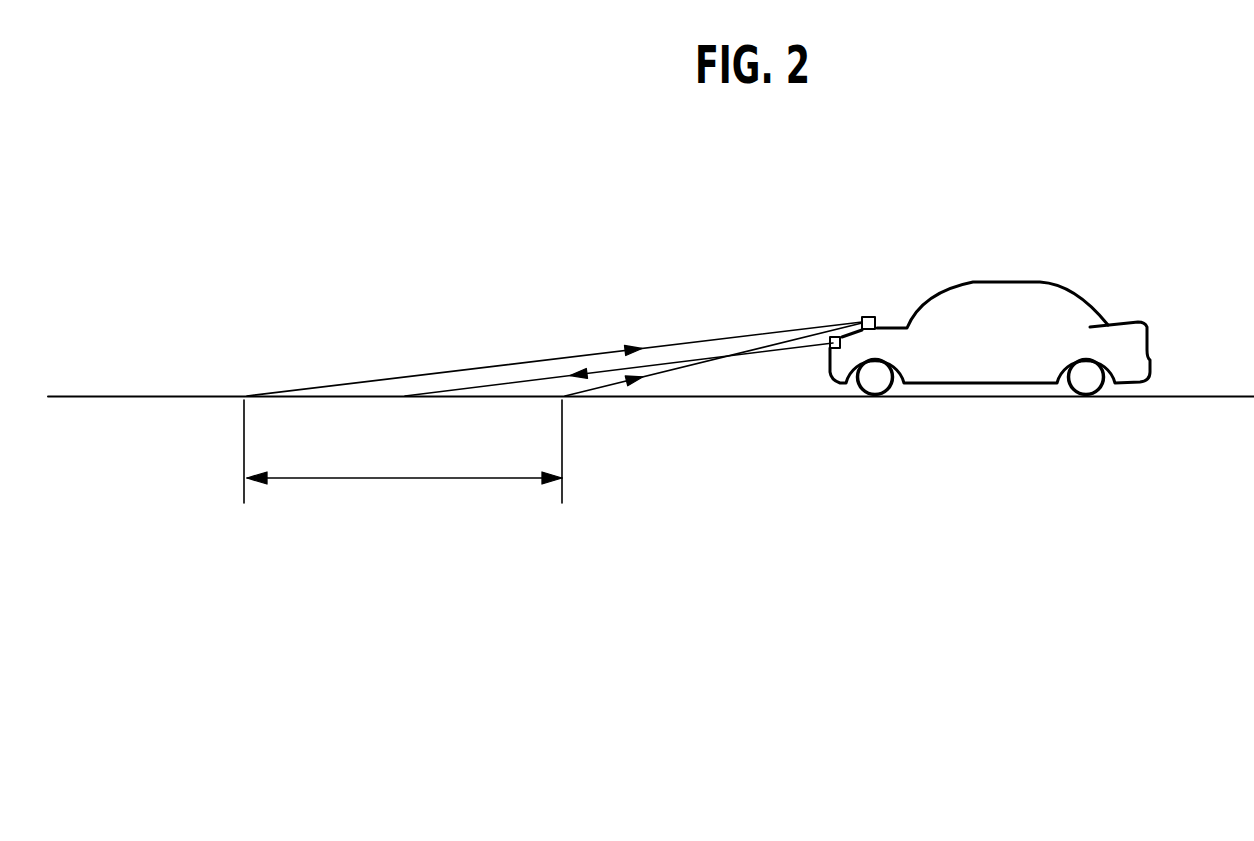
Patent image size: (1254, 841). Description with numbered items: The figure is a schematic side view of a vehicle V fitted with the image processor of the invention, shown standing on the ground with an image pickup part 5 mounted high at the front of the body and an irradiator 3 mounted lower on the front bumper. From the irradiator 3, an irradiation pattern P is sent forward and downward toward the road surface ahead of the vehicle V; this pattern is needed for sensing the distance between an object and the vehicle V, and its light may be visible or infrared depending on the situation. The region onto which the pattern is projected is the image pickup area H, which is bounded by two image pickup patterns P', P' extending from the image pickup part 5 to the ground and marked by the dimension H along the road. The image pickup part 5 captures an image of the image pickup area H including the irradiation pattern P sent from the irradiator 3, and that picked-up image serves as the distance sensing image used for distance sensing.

The irradiator 3 is at (832, 344).
The image pickup part 5 is at (865, 317).
The vehicle V is at (1060, 287).
The irradiation pattern P is at (619, 340).
The image pickup pattern P' is at (554, 320).
The image pickup area H is at (403, 463).